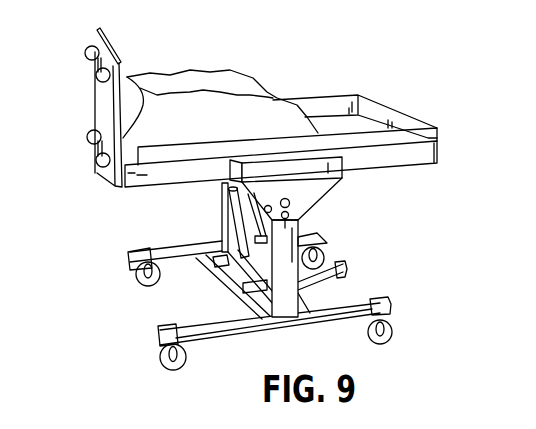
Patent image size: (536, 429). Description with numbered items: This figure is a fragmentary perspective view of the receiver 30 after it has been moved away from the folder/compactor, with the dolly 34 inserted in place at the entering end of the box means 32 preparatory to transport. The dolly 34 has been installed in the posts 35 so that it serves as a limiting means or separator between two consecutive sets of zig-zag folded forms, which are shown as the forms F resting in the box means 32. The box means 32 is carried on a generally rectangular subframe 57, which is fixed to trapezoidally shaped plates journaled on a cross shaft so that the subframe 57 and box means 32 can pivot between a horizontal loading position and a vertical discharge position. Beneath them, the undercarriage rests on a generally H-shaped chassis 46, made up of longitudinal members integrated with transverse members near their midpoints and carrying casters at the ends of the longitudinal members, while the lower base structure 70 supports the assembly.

The receiver 30 is at (325, 232).
The box means 32 is at (438, 128).
The dolly 34 is at (105, 98).
The posts 35 is at (125, 72).
The H-shaped chassis 46 is at (352, 322).
The subframe 57 is at (423, 156).
The base rails 70 is at (243, 282).
The fabric F is at (223, 85).